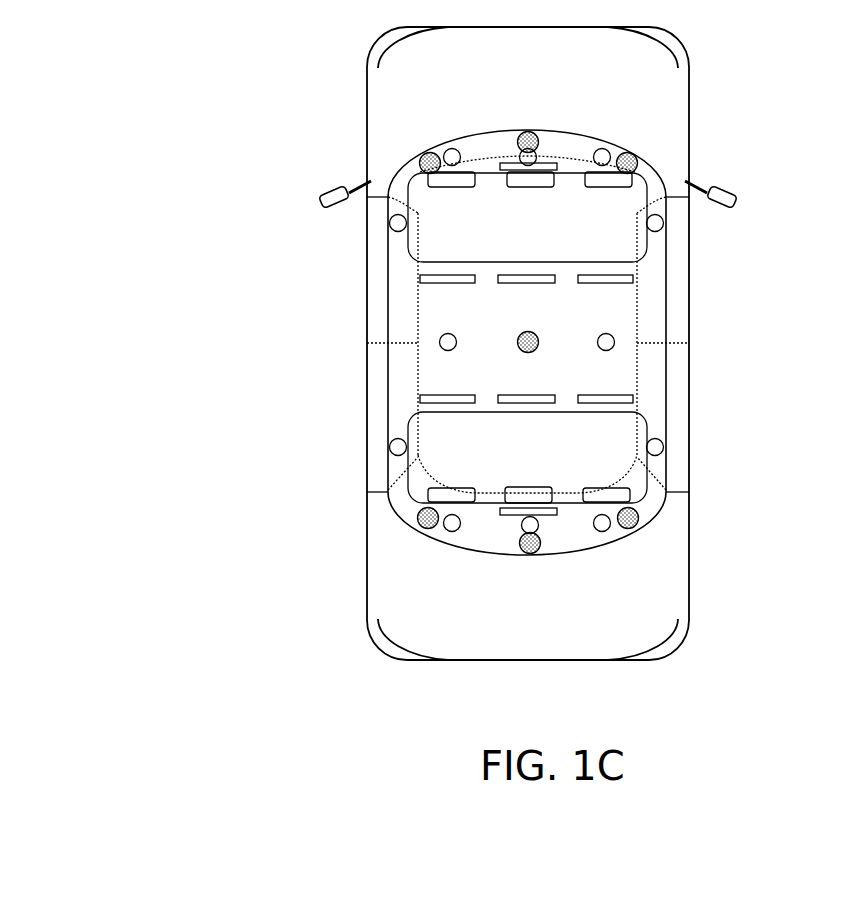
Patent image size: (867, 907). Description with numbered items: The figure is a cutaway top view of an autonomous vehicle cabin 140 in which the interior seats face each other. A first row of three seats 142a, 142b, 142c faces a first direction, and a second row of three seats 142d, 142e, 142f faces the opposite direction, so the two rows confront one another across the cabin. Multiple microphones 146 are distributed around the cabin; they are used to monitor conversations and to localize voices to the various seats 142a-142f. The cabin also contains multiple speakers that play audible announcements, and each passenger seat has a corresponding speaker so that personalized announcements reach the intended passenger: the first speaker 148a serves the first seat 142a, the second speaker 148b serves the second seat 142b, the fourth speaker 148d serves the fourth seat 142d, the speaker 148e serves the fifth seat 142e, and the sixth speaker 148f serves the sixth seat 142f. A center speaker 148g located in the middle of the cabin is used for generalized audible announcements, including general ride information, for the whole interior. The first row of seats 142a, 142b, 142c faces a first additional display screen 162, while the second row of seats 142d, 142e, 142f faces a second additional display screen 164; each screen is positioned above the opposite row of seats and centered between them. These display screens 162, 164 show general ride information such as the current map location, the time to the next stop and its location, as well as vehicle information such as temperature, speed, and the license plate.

The vehicle 140 is at (62, 95).
The first seat 142a is at (475, 232).
The second seat 142b is at (553, 232).
The third seat 142c is at (632, 232).
The fourth seat 142d is at (473, 450).
The fifth seat 142e is at (551, 450).
The sixth seat 142f is at (628, 450).
The microphones 146 is at (452, 147).
The first speaker 148a is at (423, 152).
The second speaker 148b is at (529, 130).
The fourth speaker 148d is at (423, 533).
The speaker 148e is at (627, 152).
The sixth speaker 148f is at (634, 531).
The center speaker 148g is at (538, 351).
The first additional display screen 162 is at (549, 523).
The second additional display screen 164 is at (513, 155).